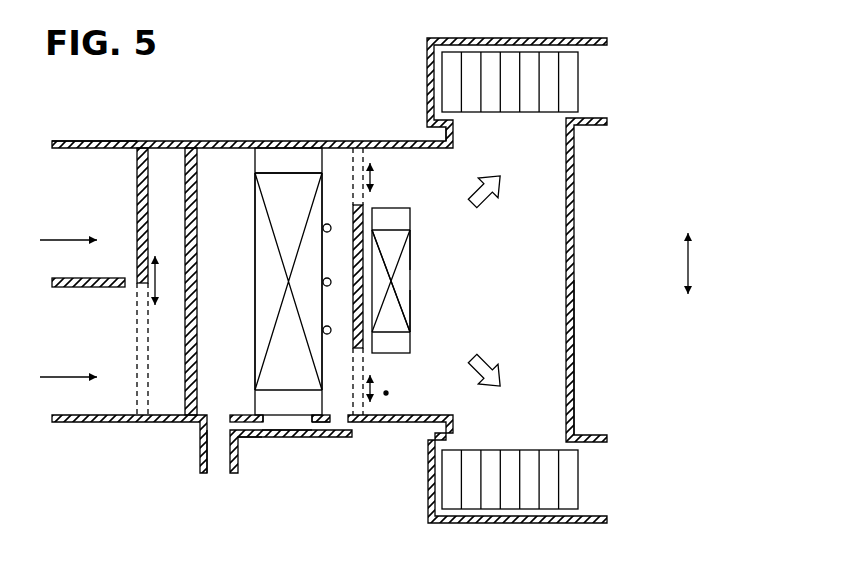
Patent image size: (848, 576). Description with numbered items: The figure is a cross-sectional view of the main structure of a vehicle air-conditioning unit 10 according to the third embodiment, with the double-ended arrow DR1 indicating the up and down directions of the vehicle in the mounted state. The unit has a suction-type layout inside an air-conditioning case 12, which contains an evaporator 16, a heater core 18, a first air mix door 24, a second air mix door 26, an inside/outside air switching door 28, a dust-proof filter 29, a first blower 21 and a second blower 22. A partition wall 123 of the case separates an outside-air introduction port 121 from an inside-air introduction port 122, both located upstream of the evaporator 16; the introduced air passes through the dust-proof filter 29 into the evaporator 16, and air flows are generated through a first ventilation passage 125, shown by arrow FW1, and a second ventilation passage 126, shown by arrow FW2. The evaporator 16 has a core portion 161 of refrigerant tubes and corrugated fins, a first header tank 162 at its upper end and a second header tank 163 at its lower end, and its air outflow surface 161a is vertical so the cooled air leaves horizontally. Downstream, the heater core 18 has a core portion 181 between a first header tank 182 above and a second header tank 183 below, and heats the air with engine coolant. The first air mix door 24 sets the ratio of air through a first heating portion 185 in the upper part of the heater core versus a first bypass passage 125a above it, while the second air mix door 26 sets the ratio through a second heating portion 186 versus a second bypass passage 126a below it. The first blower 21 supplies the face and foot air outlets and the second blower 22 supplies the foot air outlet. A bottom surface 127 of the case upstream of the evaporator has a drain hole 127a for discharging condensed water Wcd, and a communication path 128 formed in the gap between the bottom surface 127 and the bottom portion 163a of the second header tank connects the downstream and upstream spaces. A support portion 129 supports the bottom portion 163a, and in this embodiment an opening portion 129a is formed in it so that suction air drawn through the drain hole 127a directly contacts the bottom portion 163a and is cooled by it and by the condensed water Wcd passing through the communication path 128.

The vehicle air-conditioning unit 10 is at (292, 124).
The air-conditioning case 12 is at (165, 139).
The outside-air introduction port 121 is at (78, 165).
The inside-air introduction port 122 is at (82, 408).
The partition wall 123 is at (88, 279).
The first ventilation passage 125 is at (519, 143).
The first bypass passage 125a is at (408, 141).
The second ventilation passage 126 is at (519, 418).
The second bypass passage 126a is at (386, 394).
The bottom surface 127 is at (336, 436).
The drain hole 127a is at (219, 462).
The communication path 128 is at (300, 438).
The support portion 129 is at (248, 438).
The opening portion 129a is at (270, 440).
The evaporator 16 is at (251, 217).
The core portion 161 is at (245, 200).
The air outflow surface 161a is at (322, 192).
The first header tank 162 is at (277, 160).
The second header tank 163 is at (272, 437).
The bottom portion 163a is at (285, 440).
The heater core 18 is at (388, 172).
The core portion 181 is at (407, 278).
The first header tank 182 is at (386, 217).
The second header tank 183 is at (403, 352).
The first heating portion 185 is at (412, 255).
The second heating portion 186 is at (412, 305).
The first blower 21 is at (506, 58).
The second blower 22 is at (508, 500).
The first air mix door 24 is at (351, 170).
The second air mix door 26 is at (349, 290).
The inside/outside air switching door 28 is at (140, 165).
The dust-proof filter 29 is at (196, 172).
The arrow FW1 is at (497, 203).
The arrow FW2 is at (496, 358).
The condensed water Wcd is at (324, 426).
The up and down arrows DR1 is at (690, 266).